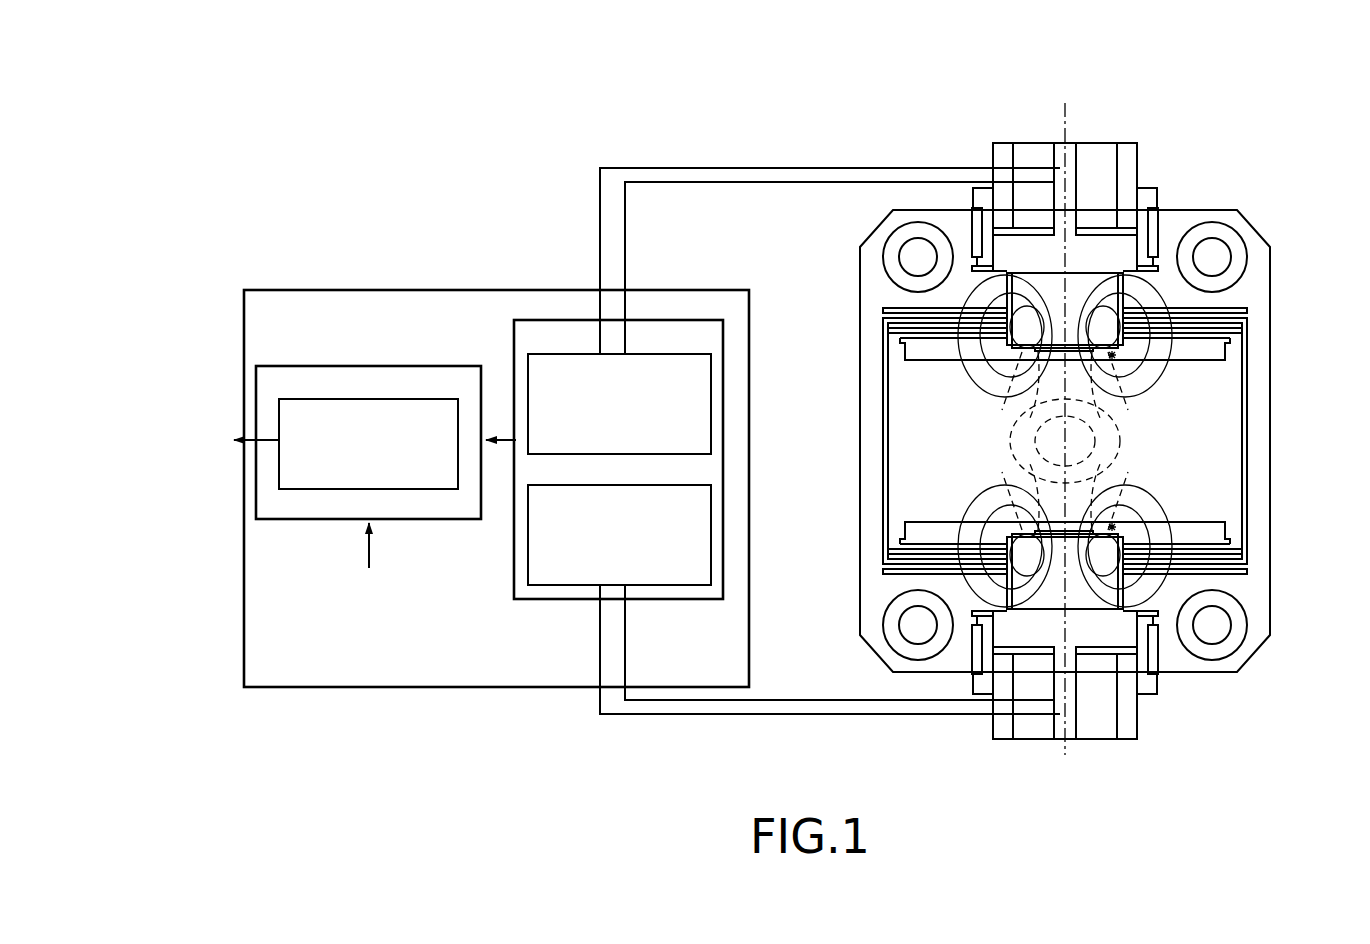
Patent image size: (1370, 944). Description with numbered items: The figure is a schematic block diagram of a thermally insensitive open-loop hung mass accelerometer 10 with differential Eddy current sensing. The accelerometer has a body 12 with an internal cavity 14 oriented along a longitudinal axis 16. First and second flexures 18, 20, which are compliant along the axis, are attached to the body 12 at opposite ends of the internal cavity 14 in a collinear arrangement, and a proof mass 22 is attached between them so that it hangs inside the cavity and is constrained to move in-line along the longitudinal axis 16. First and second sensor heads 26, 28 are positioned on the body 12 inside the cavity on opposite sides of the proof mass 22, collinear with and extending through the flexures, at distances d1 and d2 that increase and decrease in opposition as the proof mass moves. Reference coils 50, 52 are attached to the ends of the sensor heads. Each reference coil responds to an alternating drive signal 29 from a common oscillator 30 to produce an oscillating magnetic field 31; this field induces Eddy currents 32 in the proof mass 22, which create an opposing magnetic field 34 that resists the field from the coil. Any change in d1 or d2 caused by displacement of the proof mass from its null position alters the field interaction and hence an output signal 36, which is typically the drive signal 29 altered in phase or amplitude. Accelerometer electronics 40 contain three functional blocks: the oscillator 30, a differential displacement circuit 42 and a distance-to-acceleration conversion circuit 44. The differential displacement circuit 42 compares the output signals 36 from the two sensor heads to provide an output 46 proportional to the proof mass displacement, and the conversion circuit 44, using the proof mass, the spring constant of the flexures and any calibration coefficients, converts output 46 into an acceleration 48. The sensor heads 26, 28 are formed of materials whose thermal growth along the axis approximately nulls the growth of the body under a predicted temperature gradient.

The open-loop hung mass accelerometer 10 is at (458, 111).
The body 12 is at (1258, 263).
The internal cavity 14 is at (1262, 401).
The longitudinal axis 16 is at (1065, 123).
The first flexure 18 is at (888, 312).
The second flexure 20 is at (891, 552).
The proof mass 22 is at (922, 456).
The first sensor head 26 is at (1095, 257).
The second sensor head 28 is at (1098, 625).
The drive signal 29 is at (692, 215).
The oscillator 30 is at (700, 569).
The magnetic field 31 is at (1153, 290).
The Eddy currents 32 is at (1015, 409).
The opposing magnetic field 34 is at (1125, 410).
The output signal 36 is at (684, 161).
The accelerometer electronics 40 is at (362, 289).
The differential displacement circuit 42 is at (700, 453).
The distance-to-acceleration conversion circuit 44 is at (290, 395).
The output 46 is at (511, 427).
The acceleration 48 is at (180, 425).
The reference coil 50 is at (1040, 350).
The reference coil 52 is at (1036, 533).
The distance d1 is at (1112, 355).
The distance d2 is at (1112, 527).